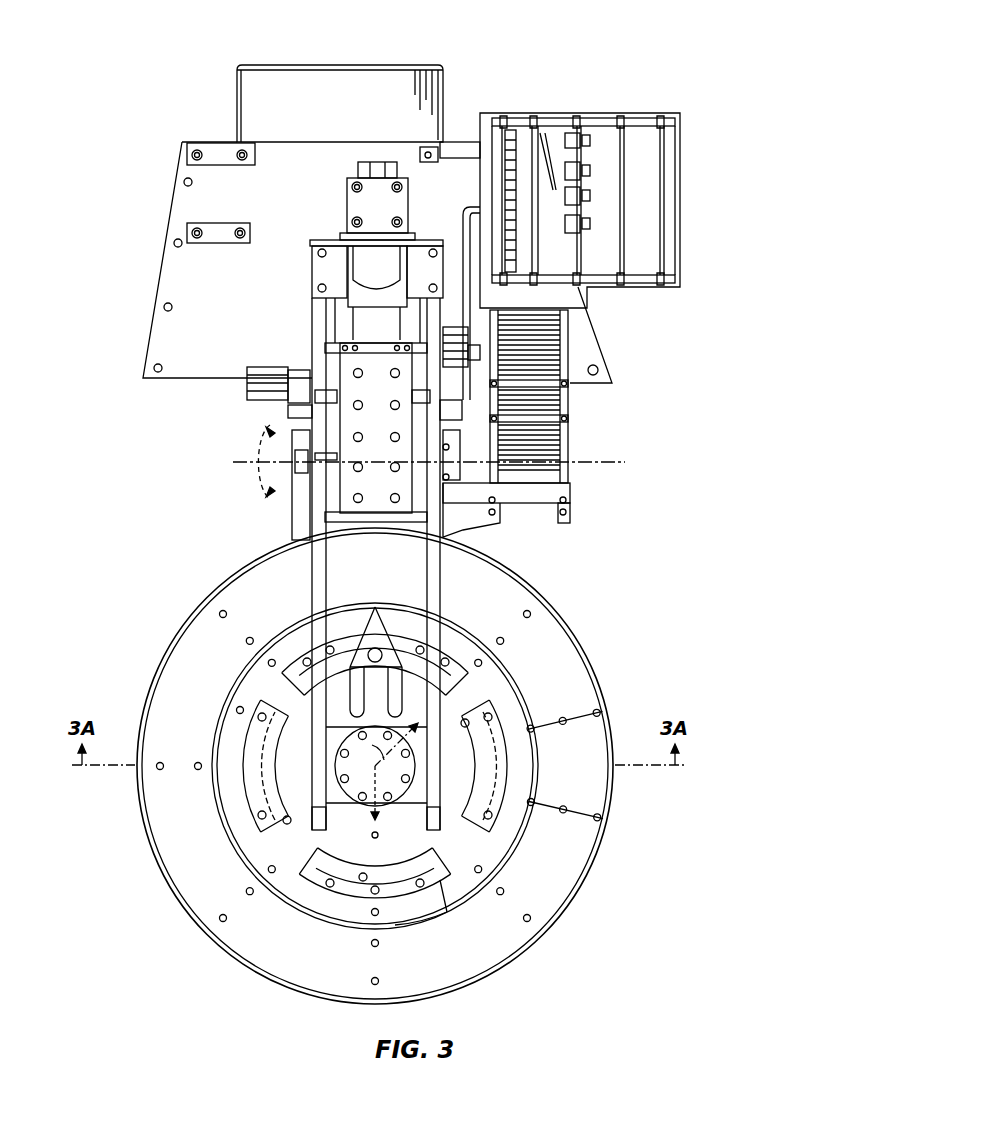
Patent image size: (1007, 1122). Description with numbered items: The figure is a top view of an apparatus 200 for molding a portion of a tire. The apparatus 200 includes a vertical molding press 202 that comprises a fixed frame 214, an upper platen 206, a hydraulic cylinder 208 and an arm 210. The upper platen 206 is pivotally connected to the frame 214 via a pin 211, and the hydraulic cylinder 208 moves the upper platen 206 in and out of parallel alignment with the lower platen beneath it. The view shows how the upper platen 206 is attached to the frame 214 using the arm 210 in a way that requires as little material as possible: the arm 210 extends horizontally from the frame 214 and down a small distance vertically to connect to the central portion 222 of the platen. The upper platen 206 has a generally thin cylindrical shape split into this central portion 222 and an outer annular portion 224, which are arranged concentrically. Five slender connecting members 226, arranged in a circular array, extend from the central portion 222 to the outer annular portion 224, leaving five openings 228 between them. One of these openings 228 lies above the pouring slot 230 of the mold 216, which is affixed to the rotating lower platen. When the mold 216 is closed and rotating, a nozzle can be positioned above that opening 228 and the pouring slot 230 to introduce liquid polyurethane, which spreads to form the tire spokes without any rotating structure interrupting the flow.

The apparatus 200 is at (706, 44).
The vertical molding press 202 is at (614, 341).
The upper platen 206 is at (362, 766).
The hydraulic cylinder 208 is at (378, 262).
The arm 210 is at (436, 577).
The pin 211 is at (463, 470).
The frame 214 is at (292, 533).
The mold 216 is at (422, 857).
The central portion 222 is at (327, 838).
The outer annular portion 224 is at (160, 820).
The connecting members 226 is at (258, 790).
The openings 228 is at (375, 605).
The pouring slot 230 is at (480, 750).